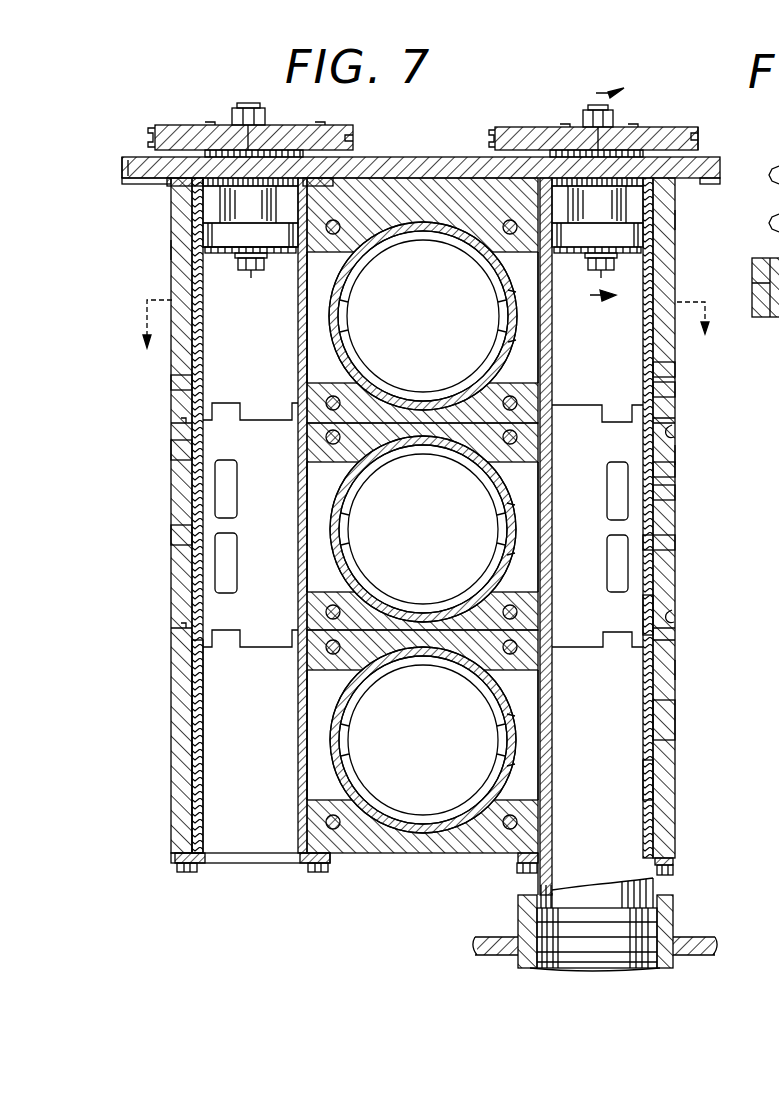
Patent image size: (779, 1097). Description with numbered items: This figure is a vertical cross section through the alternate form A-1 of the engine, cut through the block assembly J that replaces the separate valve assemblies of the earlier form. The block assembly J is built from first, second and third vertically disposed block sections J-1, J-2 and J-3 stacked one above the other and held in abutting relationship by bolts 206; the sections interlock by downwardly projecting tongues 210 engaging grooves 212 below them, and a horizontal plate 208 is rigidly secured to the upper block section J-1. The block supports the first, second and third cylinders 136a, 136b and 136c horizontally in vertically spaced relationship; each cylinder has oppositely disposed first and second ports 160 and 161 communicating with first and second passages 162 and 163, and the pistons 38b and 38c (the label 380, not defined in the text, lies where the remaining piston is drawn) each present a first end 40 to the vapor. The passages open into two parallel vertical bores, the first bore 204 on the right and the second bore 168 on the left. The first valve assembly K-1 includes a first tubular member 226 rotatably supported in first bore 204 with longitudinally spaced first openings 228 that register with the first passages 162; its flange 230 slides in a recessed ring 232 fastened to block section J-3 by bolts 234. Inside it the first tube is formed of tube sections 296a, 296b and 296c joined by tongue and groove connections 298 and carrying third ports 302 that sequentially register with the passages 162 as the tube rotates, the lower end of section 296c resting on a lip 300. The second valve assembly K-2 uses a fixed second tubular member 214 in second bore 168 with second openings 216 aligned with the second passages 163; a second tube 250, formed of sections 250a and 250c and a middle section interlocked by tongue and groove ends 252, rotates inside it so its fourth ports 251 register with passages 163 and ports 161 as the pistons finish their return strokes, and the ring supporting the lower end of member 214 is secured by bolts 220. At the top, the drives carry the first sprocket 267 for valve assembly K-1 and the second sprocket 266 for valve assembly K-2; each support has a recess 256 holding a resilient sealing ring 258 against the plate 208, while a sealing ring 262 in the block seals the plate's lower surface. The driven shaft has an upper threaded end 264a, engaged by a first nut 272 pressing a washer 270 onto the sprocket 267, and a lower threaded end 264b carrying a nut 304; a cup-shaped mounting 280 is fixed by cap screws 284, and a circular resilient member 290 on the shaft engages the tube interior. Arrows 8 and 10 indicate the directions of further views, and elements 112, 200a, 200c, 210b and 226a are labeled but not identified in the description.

The section line 8- 8 is at (419, 344).
The view direction 10 is at (625, 186).
The first end of piston 40 is at (418, 355).
The base plate 112 is at (706, 948).
The first cylinder 136a is at (392, 246).
The second cylinder 136b is at (392, 460).
The third cylinder 136c is at (392, 666).
The first ports 160 is at (508, 326).
The second ports 161 is at (350, 272).
The first passages 162 is at (546, 360).
The second passages 163 is at (304, 320).
The second bore 168 is at (196, 530).
The right frame column 200a is at (660, 281).
The right frame column lower portion 200c is at (672, 720).
The first bore 204 is at (648, 547).
The bolts 206 is at (340, 400).
The horizontal plate 208 is at (428, 160).
The downwardly projecting tongues 210 is at (668, 420).
The frame joint 210b is at (676, 474).
The grooves 212 is at (675, 431).
The second tubular member 214 is at (192, 452).
The second openings 216 is at (302, 345).
The bolts 220 is at (320, 874).
The first tubular member 226 is at (676, 494).
The base coupling 226a is at (530, 887).
The first openings 228 is at (552, 296).
The flange 230 is at (517, 860).
The recessed ring 232 is at (670, 860).
The bolts 234 is at (666, 875).
The second tube 250 is at (172, 221).
The first section of second tube 250a is at (196, 272).
The third section of second tube 250c is at (196, 682).
The fourth ports 251 is at (237, 476).
The tongue and groove defining ends 252 is at (248, 419).
The circular upwardly extending recess 256 is at (136, 160).
The resilient sealing ring 258 is at (342, 157).
The sealing ring 262 is at (190, 182).
The upper threaded end of driven shaft 264a is at (248, 103).
The lower threaded end of driven shaft 264b is at (245, 268).
The second sprocket 266 is at (173, 125).
The first sprocket 267 is at (697, 140).
The washer 270 is at (612, 123).
The first nut 272 is at (265, 113).
The cup-shaped mounting 280 is at (314, 209).
The cap screws 284 is at (210, 127).
The circular resilient member 290 is at (268, 246).
The first tube section 296a is at (646, 316).
The second tube section 296b is at (646, 610).
The third tube section 296c is at (646, 776).
The tongue and groove connections 298 is at (584, 405).
The lip 300 is at (553, 860).
The third ports 302 is at (553, 335).
The nut 304 is at (240, 272).
The cylinder unit 380 is at (452, 304).
The second piston 38b is at (448, 504).
The third piston 38c is at (450, 709).
The block assembly J is at (172, 247).
The first block section J-1 is at (676, 221).
The second block section J-2 is at (676, 453).
The third block section J-3 is at (676, 672).
The first valve assembly K-1 is at (676, 372).
The second valve assembly K-2 is at (192, 384).
The alternate form of power generating device A-1 is at (660, 395).